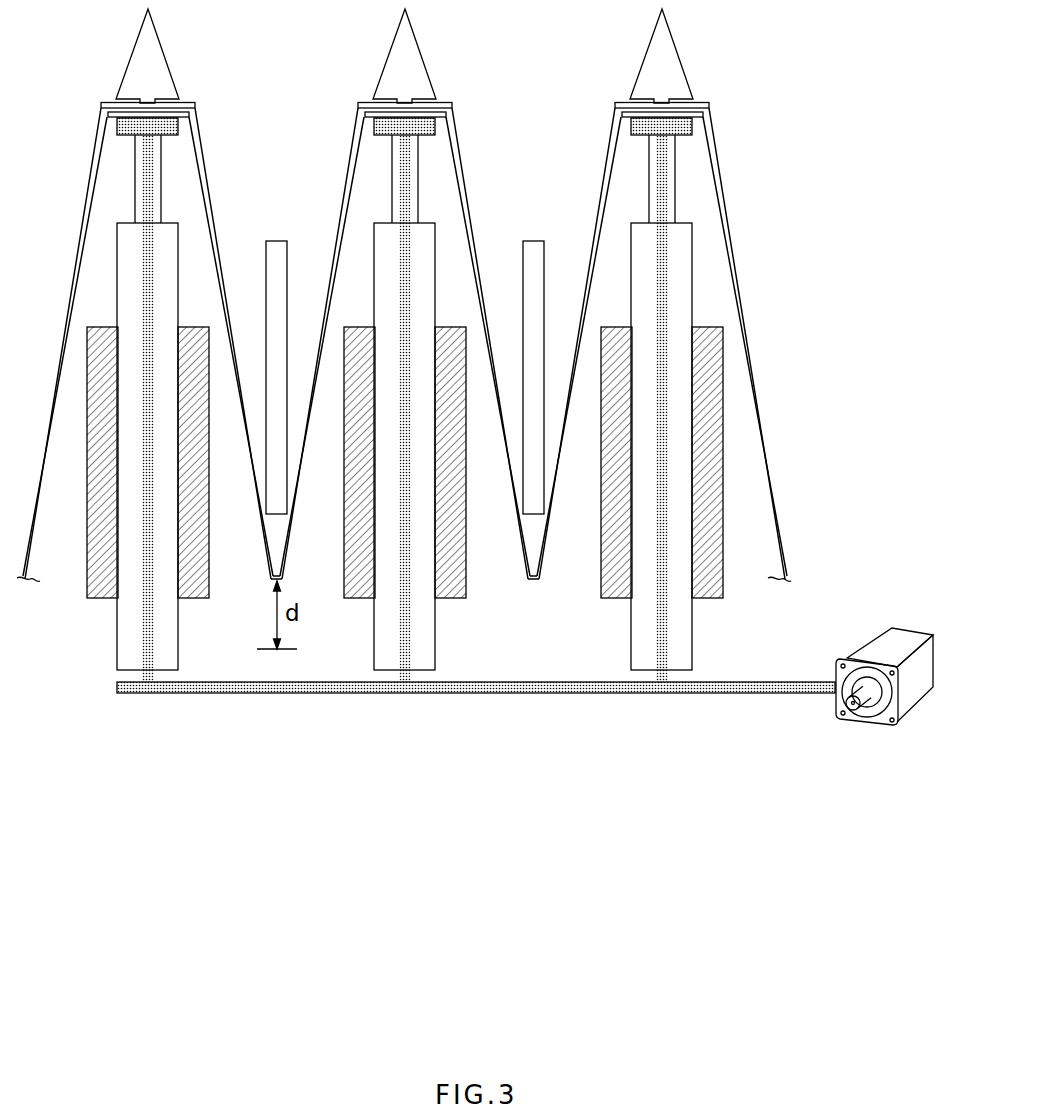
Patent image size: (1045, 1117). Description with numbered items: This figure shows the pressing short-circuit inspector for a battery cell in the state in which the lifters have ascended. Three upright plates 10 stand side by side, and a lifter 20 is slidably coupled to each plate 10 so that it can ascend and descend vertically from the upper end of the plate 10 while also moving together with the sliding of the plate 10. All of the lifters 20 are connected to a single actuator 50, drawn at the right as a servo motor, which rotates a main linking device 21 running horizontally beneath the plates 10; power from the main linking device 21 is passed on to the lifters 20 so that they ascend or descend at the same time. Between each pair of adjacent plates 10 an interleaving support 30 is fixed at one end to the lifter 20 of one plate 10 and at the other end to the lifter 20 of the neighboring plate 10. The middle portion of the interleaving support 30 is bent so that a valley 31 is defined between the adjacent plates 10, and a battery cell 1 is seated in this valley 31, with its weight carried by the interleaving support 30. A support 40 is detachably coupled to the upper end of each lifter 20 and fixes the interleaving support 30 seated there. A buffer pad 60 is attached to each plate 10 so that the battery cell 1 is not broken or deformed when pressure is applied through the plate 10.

The battery cell 1 is at (533, 260).
The plate 10 is at (675, 270).
The lifter 20 is at (663, 620).
The main linking device 21 is at (577, 695).
The interleaving support 30 is at (475, 242).
The valley 31 is at (535, 581).
The support 40 is at (404, 47).
The actuator 50 is at (868, 642).
The buffer pad 60 is at (195, 598).